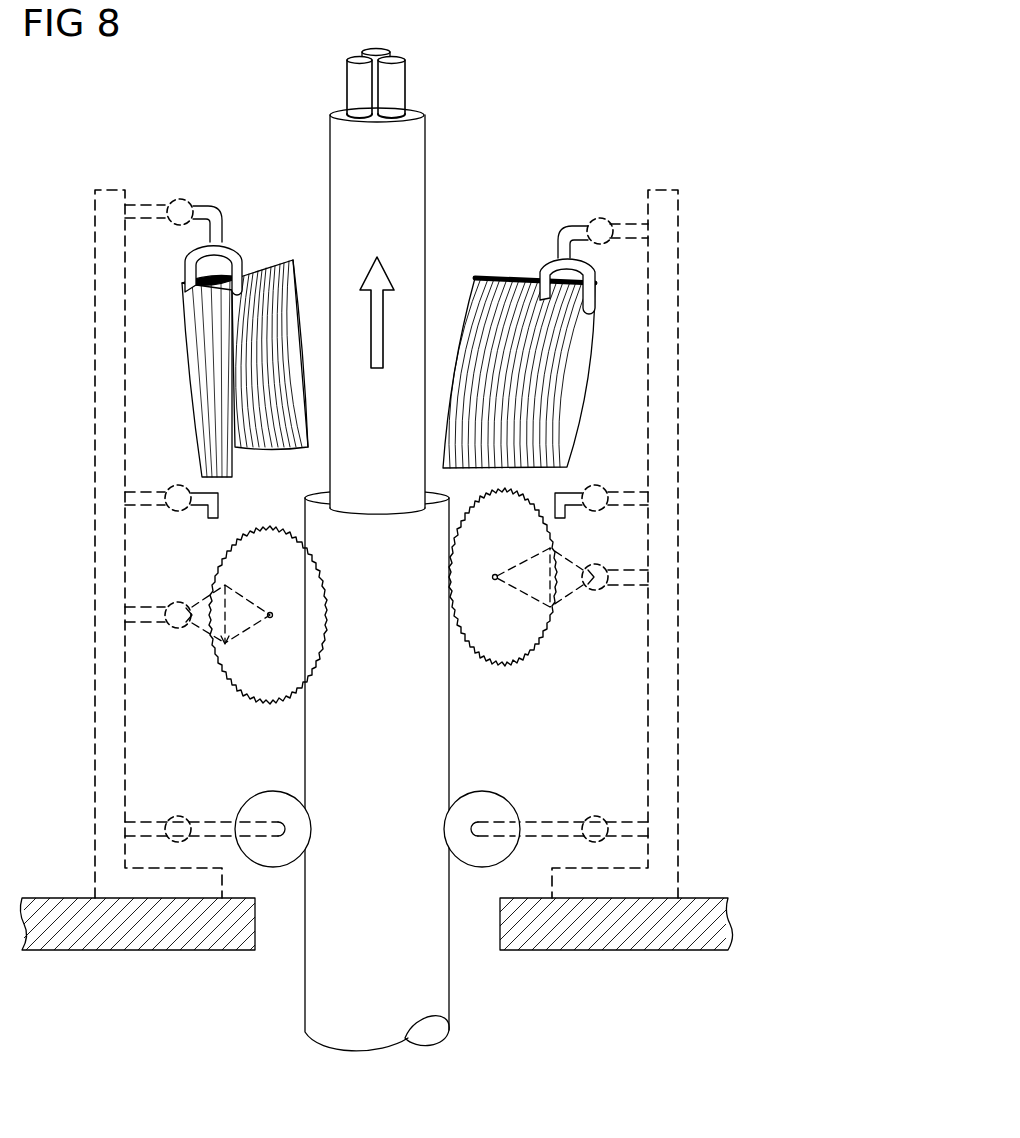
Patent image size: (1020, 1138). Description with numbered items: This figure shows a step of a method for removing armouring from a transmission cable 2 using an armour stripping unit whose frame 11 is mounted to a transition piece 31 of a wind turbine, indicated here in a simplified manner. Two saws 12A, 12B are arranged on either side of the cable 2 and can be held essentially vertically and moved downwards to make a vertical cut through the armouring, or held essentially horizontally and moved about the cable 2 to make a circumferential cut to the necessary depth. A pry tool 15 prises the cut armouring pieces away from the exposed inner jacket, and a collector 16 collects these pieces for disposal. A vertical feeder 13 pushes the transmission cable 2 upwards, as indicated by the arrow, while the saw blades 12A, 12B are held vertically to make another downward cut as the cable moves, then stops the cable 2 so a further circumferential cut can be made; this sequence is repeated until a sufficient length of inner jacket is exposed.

The transmission cable 2 is at (435, 712).
The frame 11 is at (660, 725).
The saw blade 12A is at (238, 668).
The saw blade 12B is at (522, 630).
The vertical feeder 13 is at (266, 803).
The pry tool 15 is at (192, 490).
The collector 16 is at (212, 213).
The transition piece 31 is at (172, 950).